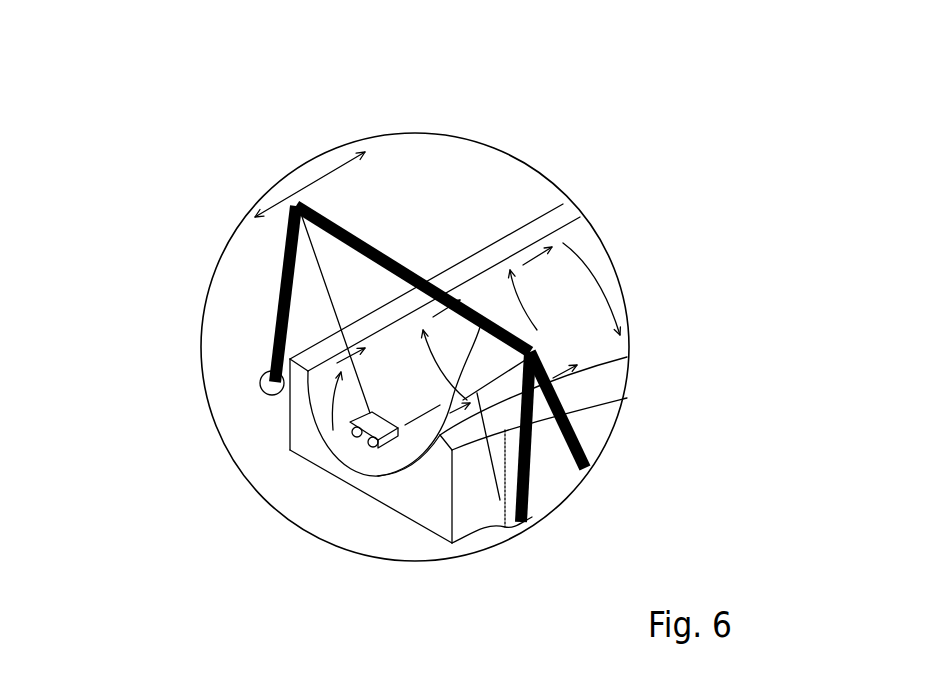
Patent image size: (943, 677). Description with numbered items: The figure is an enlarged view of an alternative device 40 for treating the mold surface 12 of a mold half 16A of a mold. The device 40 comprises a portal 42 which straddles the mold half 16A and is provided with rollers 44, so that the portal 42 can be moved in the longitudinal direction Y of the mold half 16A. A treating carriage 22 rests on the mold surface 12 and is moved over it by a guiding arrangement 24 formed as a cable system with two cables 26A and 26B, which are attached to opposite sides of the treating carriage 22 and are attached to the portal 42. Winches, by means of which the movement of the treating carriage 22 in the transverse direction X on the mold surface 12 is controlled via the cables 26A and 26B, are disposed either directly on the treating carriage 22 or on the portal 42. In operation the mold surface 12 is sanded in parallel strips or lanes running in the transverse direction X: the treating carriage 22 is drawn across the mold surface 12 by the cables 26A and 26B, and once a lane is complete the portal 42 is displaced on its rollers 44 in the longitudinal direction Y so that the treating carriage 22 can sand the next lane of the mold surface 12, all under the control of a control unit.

The mold surface 12 is at (476, 359).
The mold half 16A is at (600, 430).
The treating carriage 22 is at (377, 428).
The guiding arrangement 24 is at (415, 423).
The cable 26A is at (323, 297).
The cable 26B is at (500, 500).
The device for treating mold surfaces 40 is at (350, 428).
The portal 42 is at (385, 257).
The rollers 44 is at (263, 387).